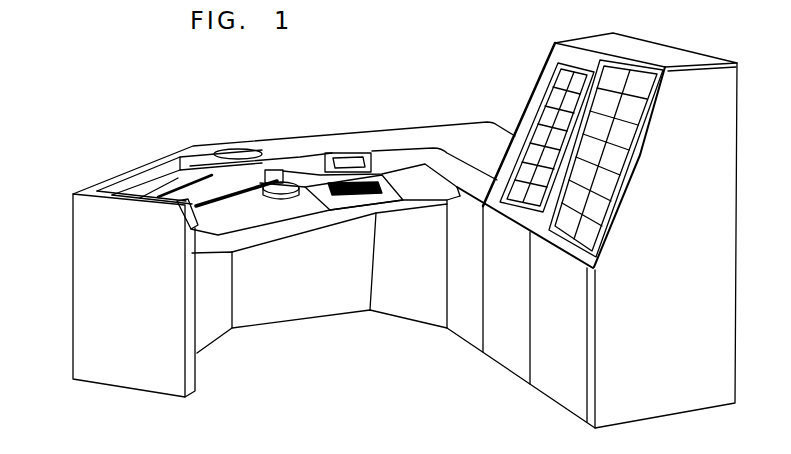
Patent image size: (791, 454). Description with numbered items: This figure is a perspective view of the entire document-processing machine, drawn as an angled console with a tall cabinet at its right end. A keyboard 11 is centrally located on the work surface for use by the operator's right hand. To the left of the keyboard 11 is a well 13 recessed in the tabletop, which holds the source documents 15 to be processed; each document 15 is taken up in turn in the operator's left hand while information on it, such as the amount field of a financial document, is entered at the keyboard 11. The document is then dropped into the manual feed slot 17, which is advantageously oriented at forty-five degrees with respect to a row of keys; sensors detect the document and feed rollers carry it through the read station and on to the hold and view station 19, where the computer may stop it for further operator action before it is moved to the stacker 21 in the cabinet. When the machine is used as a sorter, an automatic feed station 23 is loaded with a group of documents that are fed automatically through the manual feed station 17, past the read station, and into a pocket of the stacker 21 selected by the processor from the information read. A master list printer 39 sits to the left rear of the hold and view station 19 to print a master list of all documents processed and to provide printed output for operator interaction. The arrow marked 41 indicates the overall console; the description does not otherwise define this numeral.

The keyboard 11 is at (313, 172).
The well 13 is at (300, 197).
The source documents 15 is at (280, 196).
The manual feed slot 17 is at (243, 189).
The hold and view station 19 is at (351, 158).
The stacker 21 is at (558, 52).
The automatic feed station 23 is at (197, 200).
The master list printer 39 is at (252, 156).
The console assembly 41 is at (495, 378).